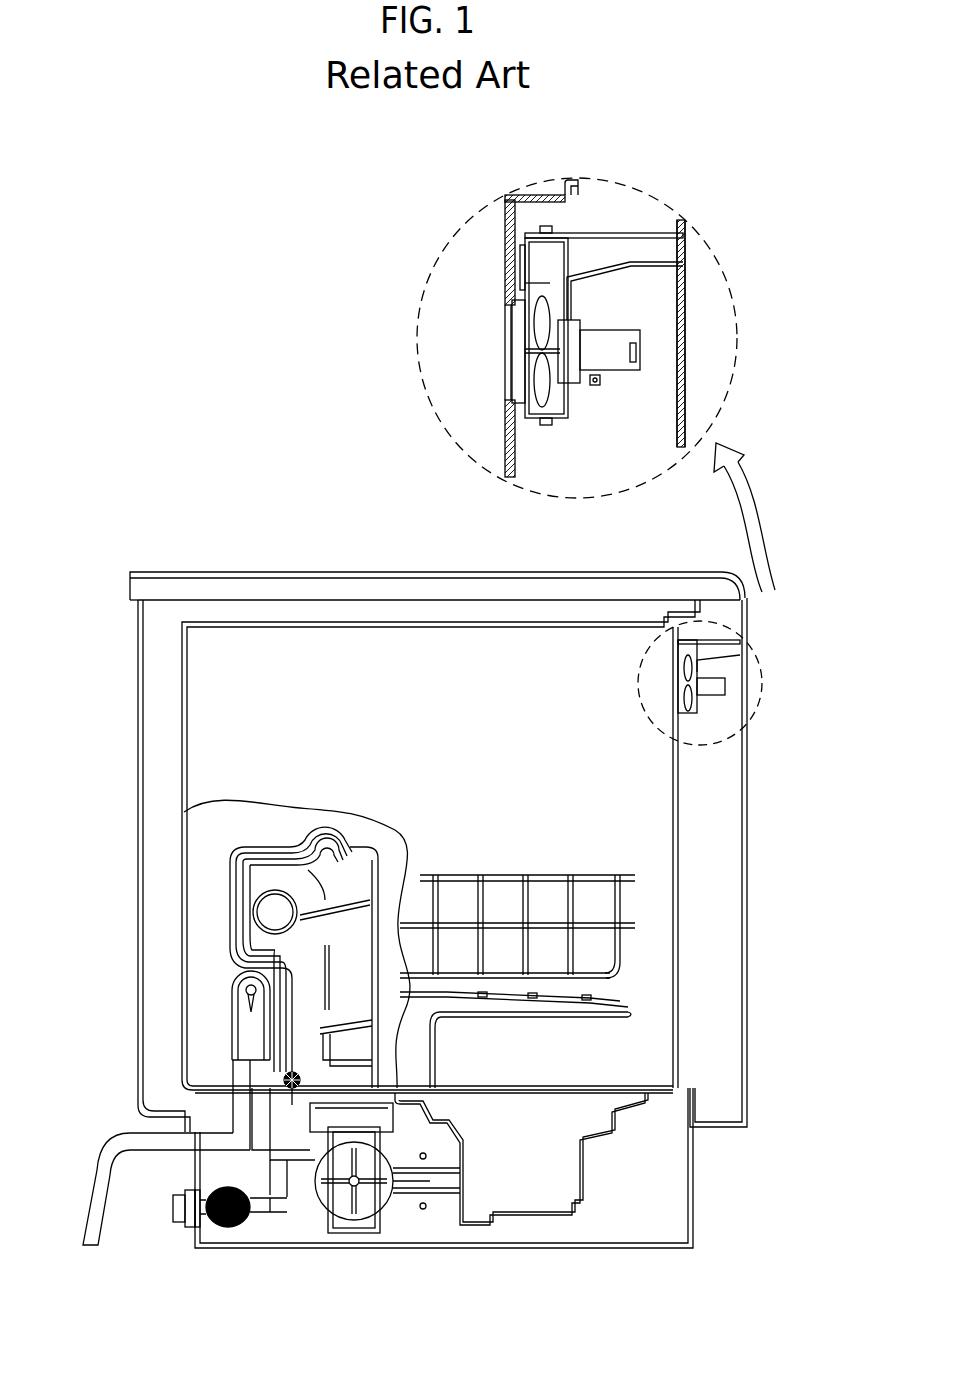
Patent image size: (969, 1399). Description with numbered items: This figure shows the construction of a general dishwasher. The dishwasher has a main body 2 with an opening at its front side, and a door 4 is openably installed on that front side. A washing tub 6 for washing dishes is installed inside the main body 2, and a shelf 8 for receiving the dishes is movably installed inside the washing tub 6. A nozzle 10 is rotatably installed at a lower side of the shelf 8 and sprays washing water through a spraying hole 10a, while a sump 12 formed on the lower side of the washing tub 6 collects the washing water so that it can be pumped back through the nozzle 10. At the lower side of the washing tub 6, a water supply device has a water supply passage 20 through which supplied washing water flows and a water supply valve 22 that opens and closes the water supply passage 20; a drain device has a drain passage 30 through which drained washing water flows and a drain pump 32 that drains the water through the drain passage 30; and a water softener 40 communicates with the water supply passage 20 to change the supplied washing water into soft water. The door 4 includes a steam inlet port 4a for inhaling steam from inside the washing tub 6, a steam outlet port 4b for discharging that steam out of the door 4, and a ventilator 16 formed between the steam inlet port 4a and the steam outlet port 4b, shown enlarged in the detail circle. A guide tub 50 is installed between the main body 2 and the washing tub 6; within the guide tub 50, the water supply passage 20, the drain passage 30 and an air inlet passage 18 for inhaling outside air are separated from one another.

The main body 2 is at (140, 656).
The door 4 is at (688, 362).
The steam inlet port 4a is at (510, 362).
The steam outlet port 4b is at (687, 265).
The washing tub 6 is at (183, 737).
The shelf 8 is at (620, 898).
The nozzle 10 is at (630, 1020).
The spraying hole 10a is at (590, 1000).
The sump 12 is at (590, 1170).
The ventilator 16 is at (611, 219).
The air inlet passage 18 is at (362, 880).
The water supply passage 20 is at (284, 1078).
The water supply valve 22 is at (230, 1228).
The drain passage 30 is at (240, 1010).
The drain pump 32 is at (363, 1212).
The water softener 40 is at (318, 1130).
The guide tub 50 is at (214, 873).